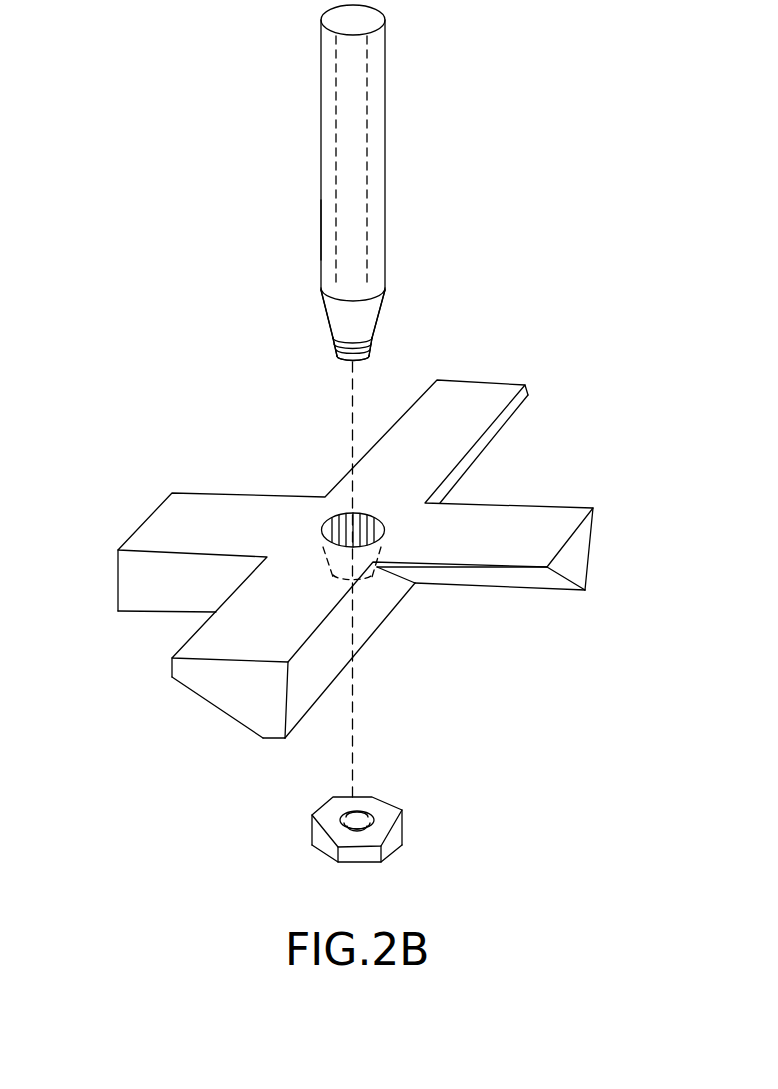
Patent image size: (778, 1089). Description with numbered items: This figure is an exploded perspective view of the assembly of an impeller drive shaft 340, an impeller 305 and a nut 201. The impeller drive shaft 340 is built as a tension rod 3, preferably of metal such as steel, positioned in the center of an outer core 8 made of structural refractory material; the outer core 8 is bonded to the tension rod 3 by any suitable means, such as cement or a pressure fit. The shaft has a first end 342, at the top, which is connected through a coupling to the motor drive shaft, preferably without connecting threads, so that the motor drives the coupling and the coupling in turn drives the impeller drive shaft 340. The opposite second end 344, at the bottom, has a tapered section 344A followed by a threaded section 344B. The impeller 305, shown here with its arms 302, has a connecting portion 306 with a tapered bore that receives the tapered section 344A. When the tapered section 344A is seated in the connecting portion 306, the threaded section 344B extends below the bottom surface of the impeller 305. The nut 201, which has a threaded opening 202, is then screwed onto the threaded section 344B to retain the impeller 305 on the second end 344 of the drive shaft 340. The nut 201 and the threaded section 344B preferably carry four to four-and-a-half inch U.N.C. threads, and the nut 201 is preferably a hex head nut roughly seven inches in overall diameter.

The tension rod 3 is at (416, 133).
The outer core 8 is at (415, 239).
The impeller drive shaft 340 is at (422, 173).
The first end of impeller shaft 342 is at (434, 42).
The second end of impeller shaft 344 is at (392, 293).
The tapered section 344A is at (410, 322).
The threaded section 344B is at (409, 344).
The arm of cross-shaped plate 302 is at (58, 597).
The impeller 305 is at (446, 518).
The connecting portion 306 is at (367, 530).
The nut 201 is at (390, 803).
The threaded opening 202 is at (340, 822).